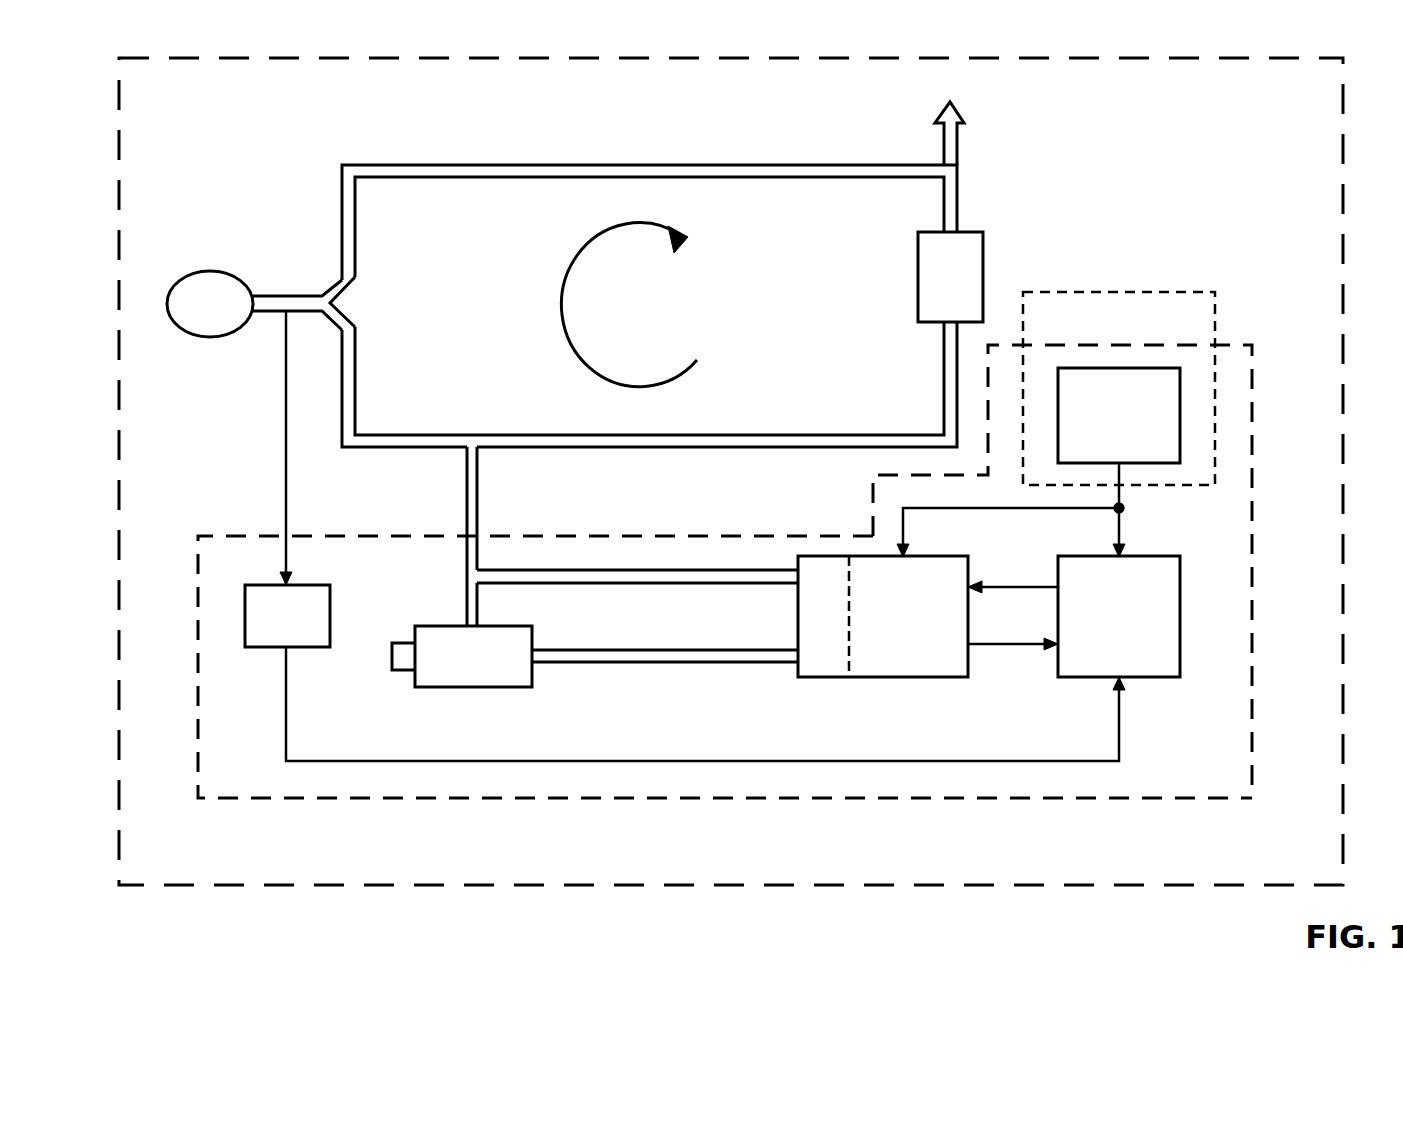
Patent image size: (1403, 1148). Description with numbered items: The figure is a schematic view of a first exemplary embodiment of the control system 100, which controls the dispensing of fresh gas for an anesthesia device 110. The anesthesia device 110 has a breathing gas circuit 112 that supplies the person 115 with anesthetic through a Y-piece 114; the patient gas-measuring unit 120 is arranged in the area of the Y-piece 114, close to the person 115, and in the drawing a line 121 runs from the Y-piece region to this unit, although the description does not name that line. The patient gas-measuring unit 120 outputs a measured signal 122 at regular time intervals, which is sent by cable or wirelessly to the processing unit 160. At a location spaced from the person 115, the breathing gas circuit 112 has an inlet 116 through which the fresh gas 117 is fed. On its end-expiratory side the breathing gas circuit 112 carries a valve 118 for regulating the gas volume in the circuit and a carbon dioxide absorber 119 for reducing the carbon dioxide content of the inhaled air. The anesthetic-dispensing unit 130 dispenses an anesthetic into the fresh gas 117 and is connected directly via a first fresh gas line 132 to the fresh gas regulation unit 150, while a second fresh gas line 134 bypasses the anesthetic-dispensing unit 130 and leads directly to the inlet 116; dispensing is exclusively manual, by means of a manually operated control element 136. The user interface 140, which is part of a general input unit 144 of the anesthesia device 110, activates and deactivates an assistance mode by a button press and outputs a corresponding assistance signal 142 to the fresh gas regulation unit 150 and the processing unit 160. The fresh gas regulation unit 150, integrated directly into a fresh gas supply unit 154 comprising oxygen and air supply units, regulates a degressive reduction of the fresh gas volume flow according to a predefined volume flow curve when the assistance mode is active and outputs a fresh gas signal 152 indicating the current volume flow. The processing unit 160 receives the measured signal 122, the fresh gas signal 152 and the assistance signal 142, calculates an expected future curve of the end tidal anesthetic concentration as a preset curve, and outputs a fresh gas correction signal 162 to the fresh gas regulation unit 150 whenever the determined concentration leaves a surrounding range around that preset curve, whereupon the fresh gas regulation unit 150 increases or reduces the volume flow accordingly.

The control system 100 is at (216, 536).
The anesthesia device 110 is at (119, 122).
The breathing gas circuit 112 is at (470, 165).
The Y-piece 114 is at (333, 288).
The person 115 is at (208, 283).
The inlet 116 is at (470, 448).
The fresh gas 117 is at (470, 508).
The valve 118 is at (952, 140).
The CO2 absorber 119 is at (930, 293).
The patient gas-measuring unit 120 is at (266, 631).
The intake sensor line 121 is at (286, 312).
The measured signal 122 is at (325, 762).
The anesthetic-dispensing unit 130 is at (450, 670).
The first fresh gas line 132 is at (682, 656).
The second fresh gas line 134 is at (594, 575).
The control element 136 is at (402, 663).
The user interface 140 is at (1099, 432).
The assistance signal 142 is at (1120, 487).
The general input unit 144 is at (1197, 316).
The fresh gas regulation unit 150 is at (878, 625).
The fresh gas signal 152 is at (990, 646).
The fresh gas supply unit 154 is at (818, 664).
The processing unit 160 is at (1099, 625).
The fresh gas correction signal 162 is at (1022, 589).